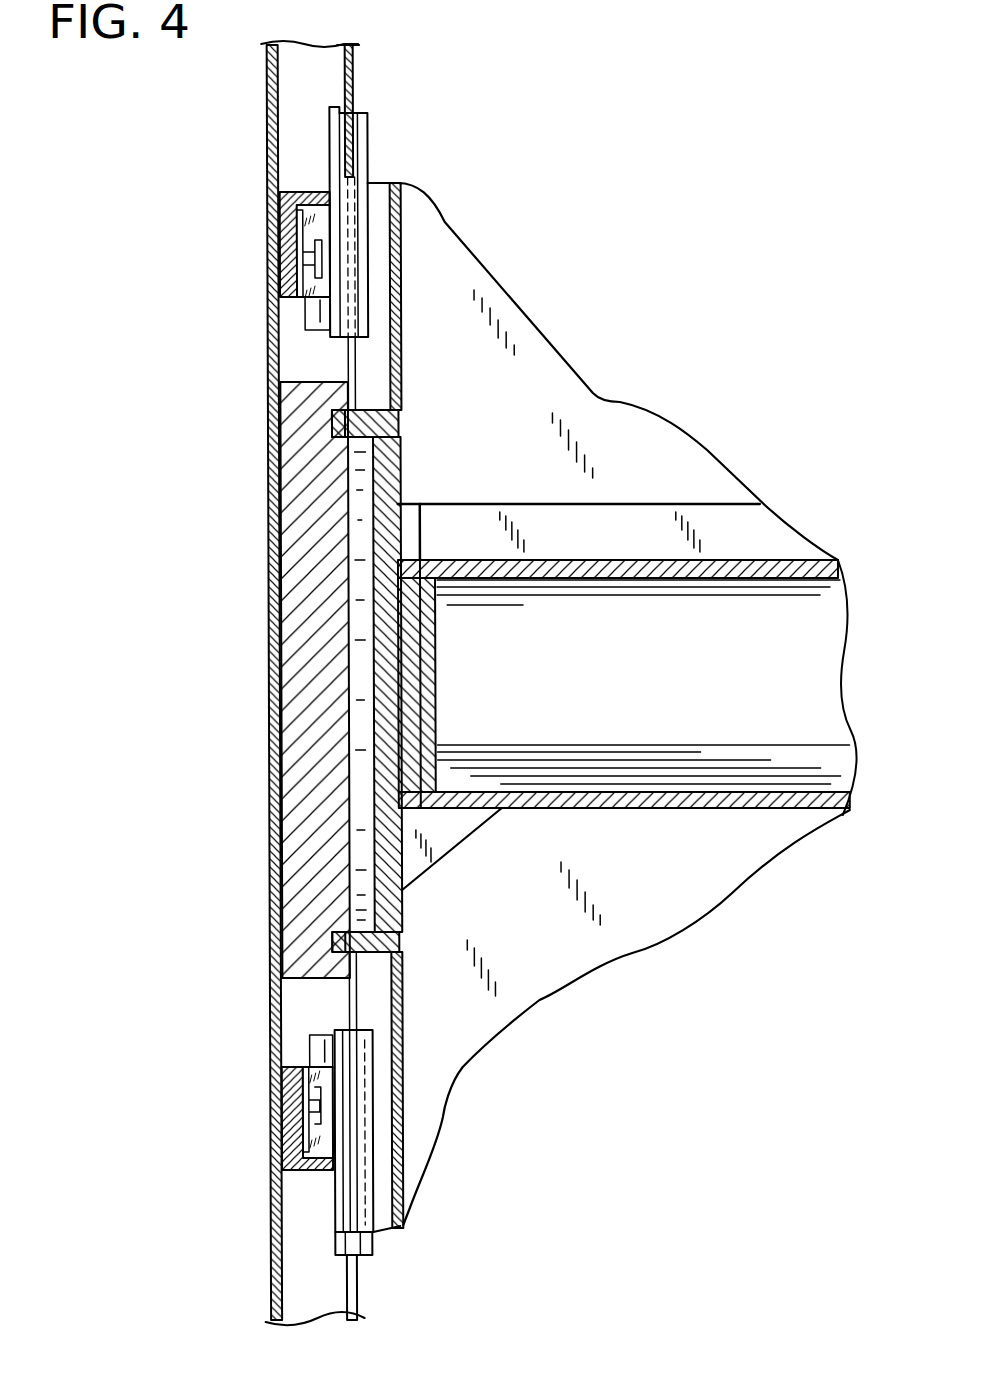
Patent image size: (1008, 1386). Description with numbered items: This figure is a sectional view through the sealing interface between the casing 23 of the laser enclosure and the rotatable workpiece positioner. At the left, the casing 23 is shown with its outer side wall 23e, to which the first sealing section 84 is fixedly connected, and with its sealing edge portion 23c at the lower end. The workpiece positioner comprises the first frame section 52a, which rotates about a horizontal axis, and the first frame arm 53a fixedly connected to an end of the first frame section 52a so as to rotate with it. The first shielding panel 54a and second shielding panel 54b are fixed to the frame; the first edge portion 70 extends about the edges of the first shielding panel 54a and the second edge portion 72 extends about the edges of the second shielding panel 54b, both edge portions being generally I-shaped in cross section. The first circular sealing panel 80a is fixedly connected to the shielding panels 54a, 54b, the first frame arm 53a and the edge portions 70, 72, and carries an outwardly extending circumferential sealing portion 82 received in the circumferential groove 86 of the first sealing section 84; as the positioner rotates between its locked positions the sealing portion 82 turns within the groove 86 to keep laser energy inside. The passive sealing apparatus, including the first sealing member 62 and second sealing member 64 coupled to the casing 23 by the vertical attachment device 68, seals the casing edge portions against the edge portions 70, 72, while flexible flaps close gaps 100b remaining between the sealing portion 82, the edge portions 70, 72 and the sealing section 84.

The casing 23 is at (348, 70).
The sealing edge portion 23c is at (348, 1300).
The outer side wall 23e is at (268, 757).
The first frame section 52a is at (765, 568).
The first frame arm 53a is at (408, 634).
The first shielding panel 54a is at (697, 882).
The second shielding panel 54b is at (549, 360).
The first sealing member 62 is at (368, 1243).
The second sealing member 64 is at (352, 135).
The vertical attachment device 68 is at (243, 239).
The first edge portion 70 is at (376, 1190).
The second edge portion 72 is at (374, 258).
The first circular sealing panel 80a is at (384, 465).
The sealing portion 82 is at (350, 422).
The first sealing section 84 is at (298, 657).
The circumferential groove 86 is at (330, 425).
The gap 100b is at (336, 370).